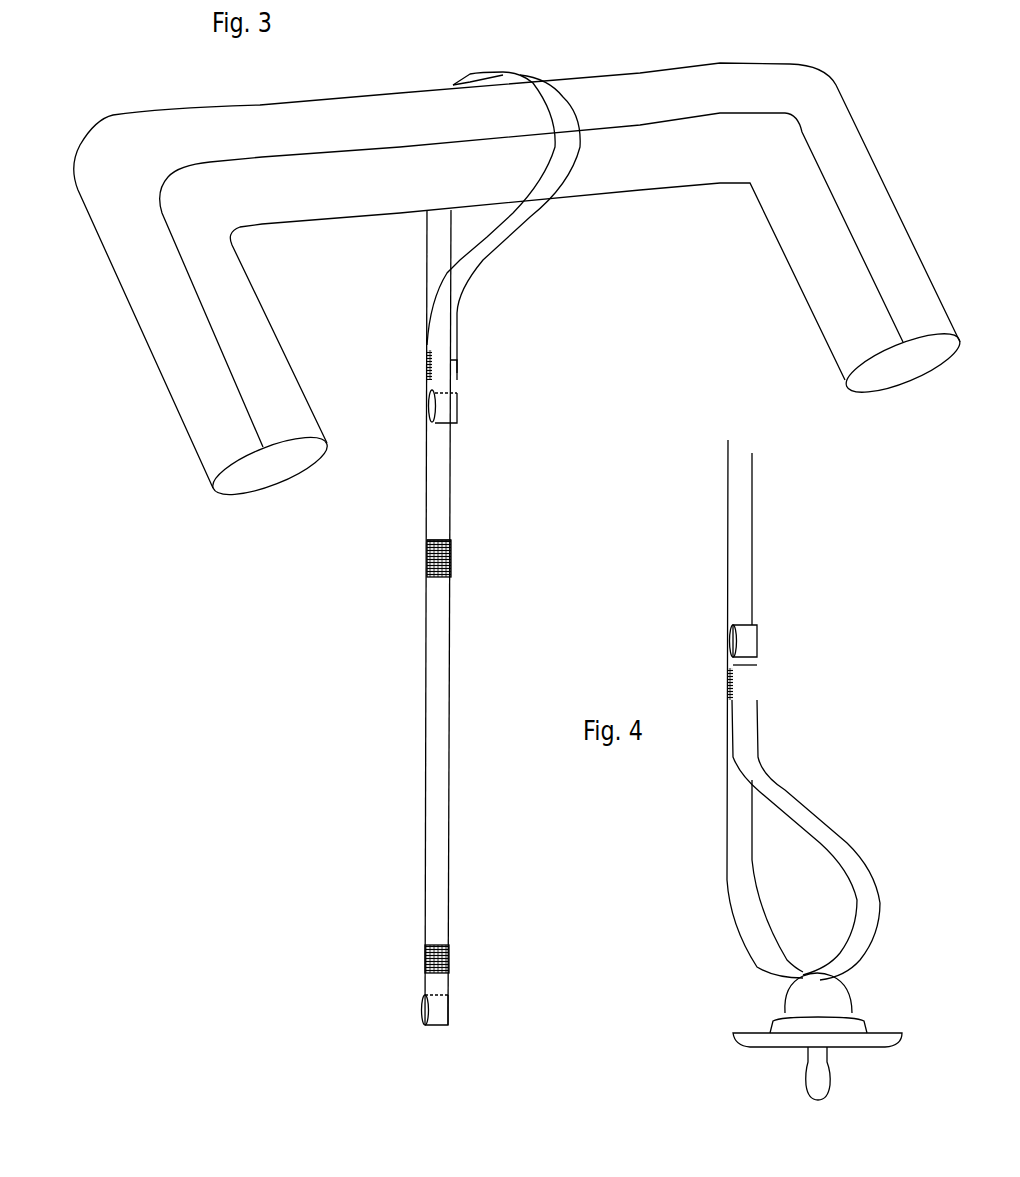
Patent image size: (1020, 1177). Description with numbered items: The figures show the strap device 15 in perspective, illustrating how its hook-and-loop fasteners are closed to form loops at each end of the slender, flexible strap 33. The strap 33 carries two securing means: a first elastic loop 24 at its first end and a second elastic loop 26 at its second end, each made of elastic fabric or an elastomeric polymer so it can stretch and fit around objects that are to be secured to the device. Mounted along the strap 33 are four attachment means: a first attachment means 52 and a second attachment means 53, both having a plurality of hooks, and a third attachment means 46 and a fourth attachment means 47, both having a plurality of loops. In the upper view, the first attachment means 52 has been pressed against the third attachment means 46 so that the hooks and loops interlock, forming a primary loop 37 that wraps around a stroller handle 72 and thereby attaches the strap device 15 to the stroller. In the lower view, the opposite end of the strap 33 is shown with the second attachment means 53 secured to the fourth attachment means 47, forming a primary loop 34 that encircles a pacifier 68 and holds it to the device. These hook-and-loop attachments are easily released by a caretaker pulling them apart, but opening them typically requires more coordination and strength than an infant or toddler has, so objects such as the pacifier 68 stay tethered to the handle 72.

In FIG. 3, the strap device 15 is at (456, 530).
In FIG. 4, the strap device 15 is at (710, 848).
In FIG. 3, the first elastic loop 24 is at (440, 408).
In FIG. 3, the second elastic loop 26 is at (432, 1012).
In FIG. 4, the second elastic loop 26 is at (742, 640).
In FIG. 3, the flexible strap 33 is at (436, 476).
In FIG. 4, the flexible strap 33 is at (738, 572).
In FIG. 4, the primary loop 34 is at (870, 918).
In FIG. 3, the primary loop 37 is at (528, 80).
In FIG. 3, the third attachment means 46 is at (426, 368).
In FIG. 3, the fourth attachment means 47 is at (451, 562).
In FIG. 4, the fourth attachment means 47 is at (730, 680).
In FIG. 3, the first attachment means 52 is at (436, 368).
In FIG. 3, the second attachment means 53 is at (448, 962).
In FIG. 4, the second attachment means 53 is at (736, 681).
In FIG. 4, the pacifier 68 is at (755, 1011).
In FIG. 3, the stroller handle 72 is at (788, 327).